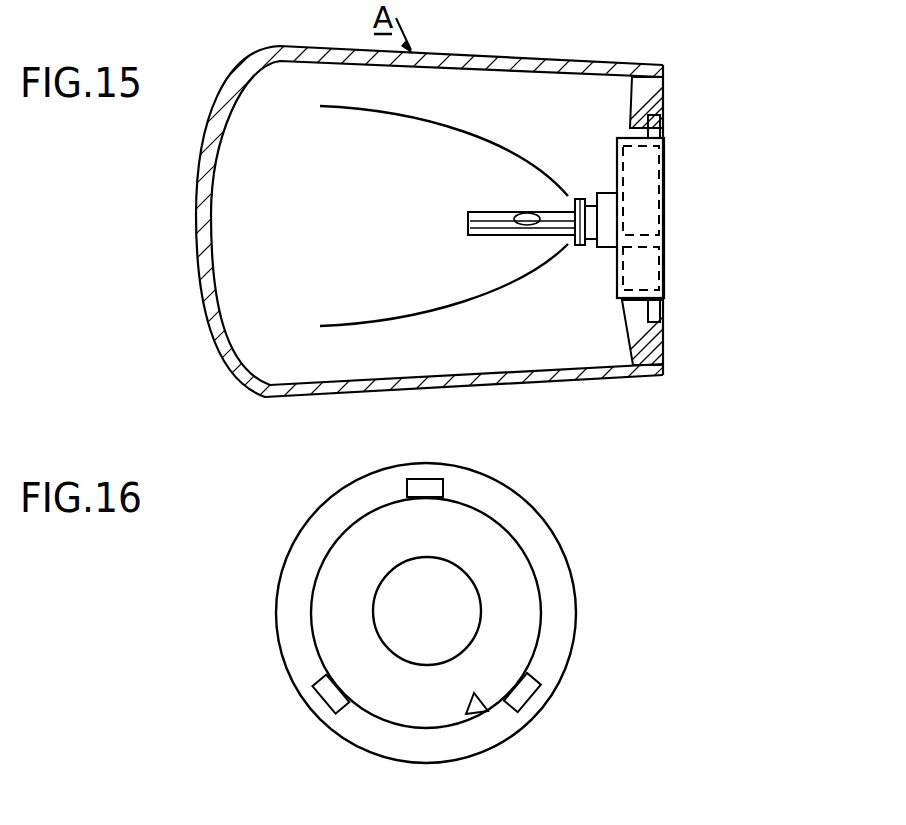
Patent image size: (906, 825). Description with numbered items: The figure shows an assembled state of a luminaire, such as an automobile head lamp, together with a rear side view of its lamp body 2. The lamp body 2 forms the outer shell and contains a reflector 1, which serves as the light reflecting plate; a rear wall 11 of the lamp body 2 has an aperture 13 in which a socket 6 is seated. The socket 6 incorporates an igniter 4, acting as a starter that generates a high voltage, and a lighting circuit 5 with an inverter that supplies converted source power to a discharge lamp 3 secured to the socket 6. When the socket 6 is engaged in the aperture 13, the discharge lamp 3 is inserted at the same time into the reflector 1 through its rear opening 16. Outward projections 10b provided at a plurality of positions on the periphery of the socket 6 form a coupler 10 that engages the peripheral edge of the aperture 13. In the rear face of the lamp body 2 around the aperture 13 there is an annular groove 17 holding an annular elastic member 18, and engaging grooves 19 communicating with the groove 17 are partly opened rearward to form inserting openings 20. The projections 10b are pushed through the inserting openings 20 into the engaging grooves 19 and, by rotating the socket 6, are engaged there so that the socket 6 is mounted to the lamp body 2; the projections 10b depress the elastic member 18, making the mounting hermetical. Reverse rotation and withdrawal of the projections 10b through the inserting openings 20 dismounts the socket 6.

In FIG. 15, the reflector 1 is at (418, 113).
In FIG. 16, the reflector 1 is at (372, 612).
In FIG. 15, the lamp body 2 is at (514, 62).
In FIG. 16, the lamp body 2 is at (312, 511).
In FIG. 15, the discharge lamp 3 is at (532, 212).
In FIG. 15, the igniter 4 is at (661, 268).
In FIG. 15, the lighting circuit 5 is at (617, 166).
In FIG. 15, the socket 6 is at (616, 264).
In FIG. 15, the coupler 10 is at (665, 135).
In FIG. 15, the outward projections 10b is at (664, 124).
In FIG. 15, the rear wall 11 is at (663, 118).
In FIG. 15, the aperture 13 is at (626, 304).
In FIG. 16, the aperture 13 is at (483, 700).
In FIG. 15, the rear opening 16 is at (567, 243).
In FIG. 16, the rear opening 16 is at (453, 626).
In FIG. 15, the annular groove 17 is at (632, 125).
In FIG. 15, the annular elastic member 18 is at (622, 366).
In FIG. 15, the engaging grooves 19 is at (663, 123).
In FIG. 16, the inserting openings 20 is at (428, 488).